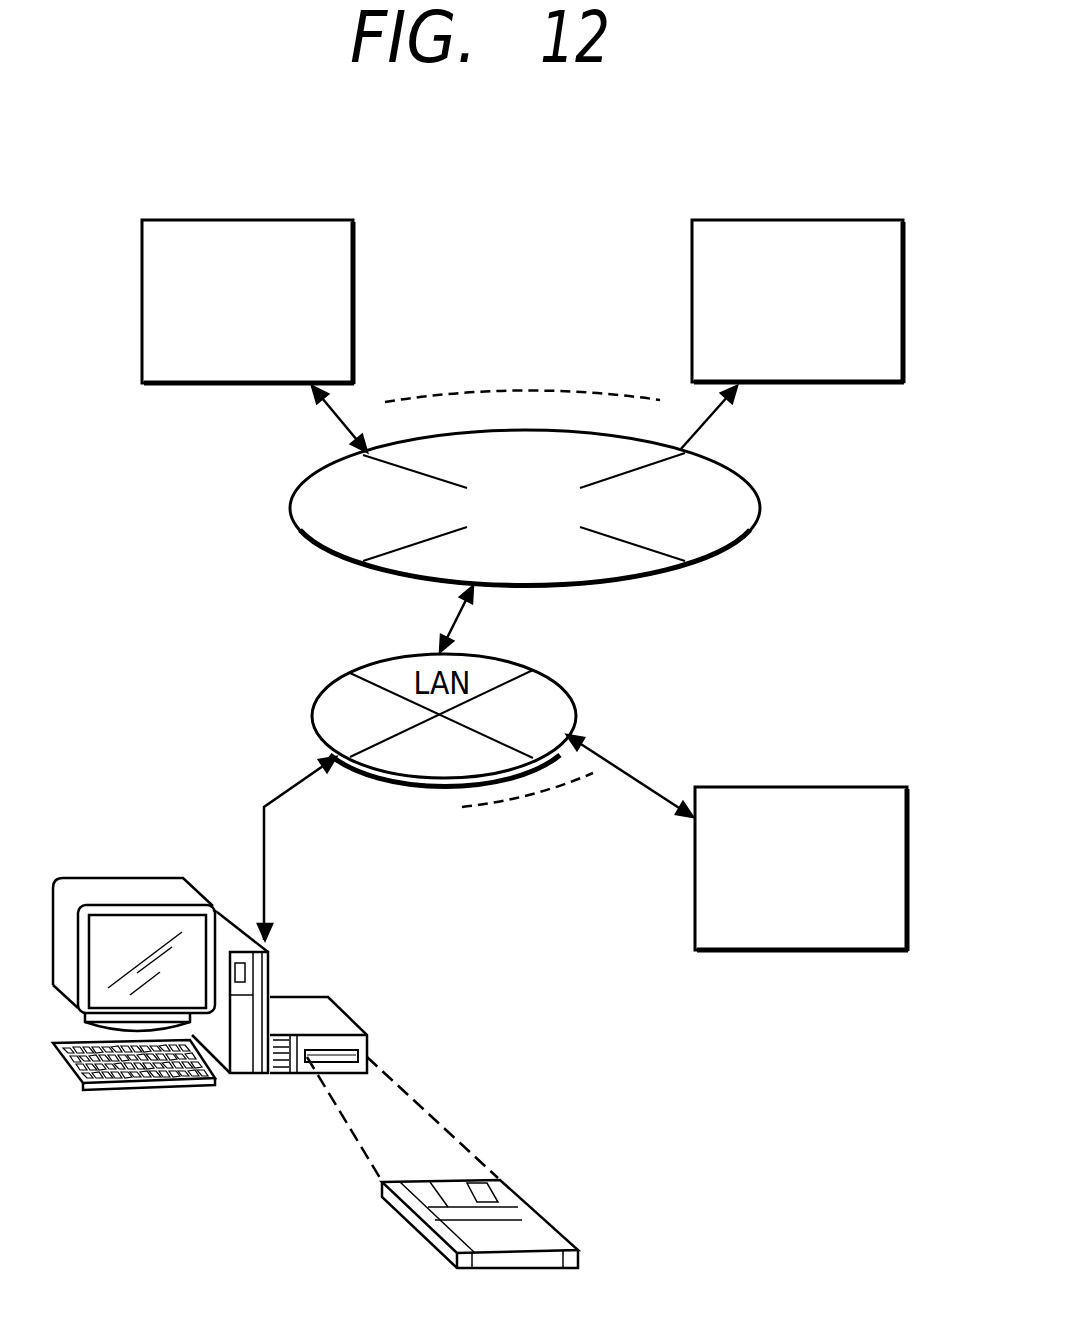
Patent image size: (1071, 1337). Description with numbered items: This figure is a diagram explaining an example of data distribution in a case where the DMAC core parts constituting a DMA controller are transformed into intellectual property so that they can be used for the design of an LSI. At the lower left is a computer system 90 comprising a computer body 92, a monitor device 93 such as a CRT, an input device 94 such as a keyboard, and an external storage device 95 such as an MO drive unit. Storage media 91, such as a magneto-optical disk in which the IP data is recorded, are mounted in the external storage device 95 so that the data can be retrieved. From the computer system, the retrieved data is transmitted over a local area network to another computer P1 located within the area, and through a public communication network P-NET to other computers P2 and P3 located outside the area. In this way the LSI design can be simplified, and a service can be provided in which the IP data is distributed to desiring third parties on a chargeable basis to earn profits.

The computer P1 is at (843, 785).
The computer P2 is at (287, 219).
The computer P3 is at (838, 219).
The public communication network P-NET is at (760, 478).
The computer system 90 is at (297, 891).
The storage media 91 is at (528, 1202).
The computer body 92 is at (272, 978).
The monitor device 93 is at (152, 877).
The input device 94 is at (130, 1086).
The external storage device 95 is at (348, 1013).